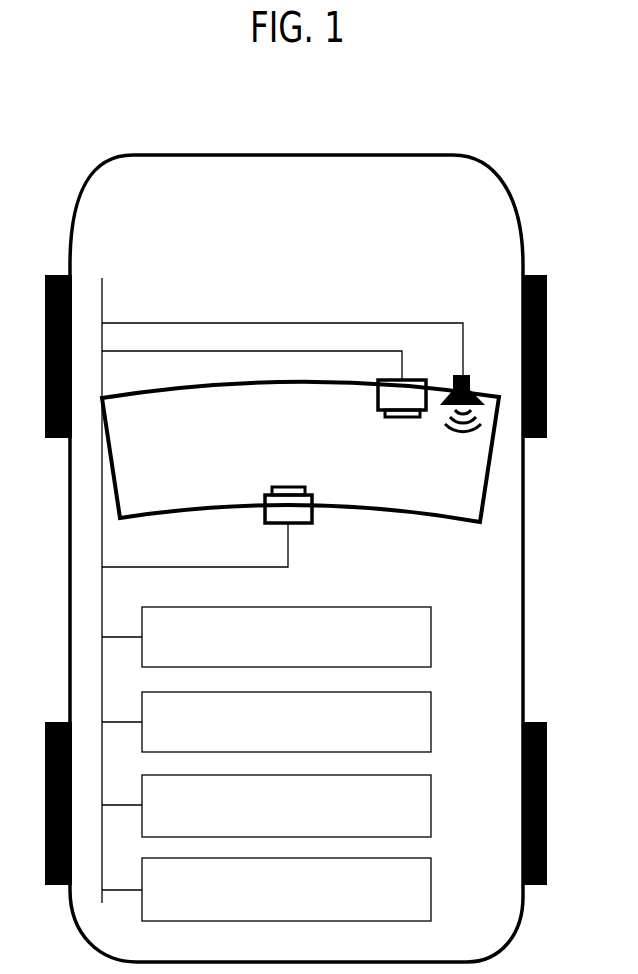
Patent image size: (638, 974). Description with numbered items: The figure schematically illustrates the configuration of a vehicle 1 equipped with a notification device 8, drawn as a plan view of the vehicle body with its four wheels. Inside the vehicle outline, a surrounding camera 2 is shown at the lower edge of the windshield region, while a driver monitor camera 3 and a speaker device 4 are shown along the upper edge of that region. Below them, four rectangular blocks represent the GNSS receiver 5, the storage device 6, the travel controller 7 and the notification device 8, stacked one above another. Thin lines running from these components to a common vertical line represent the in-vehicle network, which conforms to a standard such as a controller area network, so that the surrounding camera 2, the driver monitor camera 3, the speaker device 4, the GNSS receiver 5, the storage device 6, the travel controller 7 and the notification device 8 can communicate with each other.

The vehicle 1 is at (427, 148).
The surrounding camera 2 is at (265, 511).
The driver monitor camera 3 is at (410, 380).
The speaker device 4 is at (470, 378).
The GNSS receiver 5 is at (431, 640).
The storage device 6 is at (431, 735).
The travel controller 7 is at (431, 818).
The notification device 8 is at (431, 902).